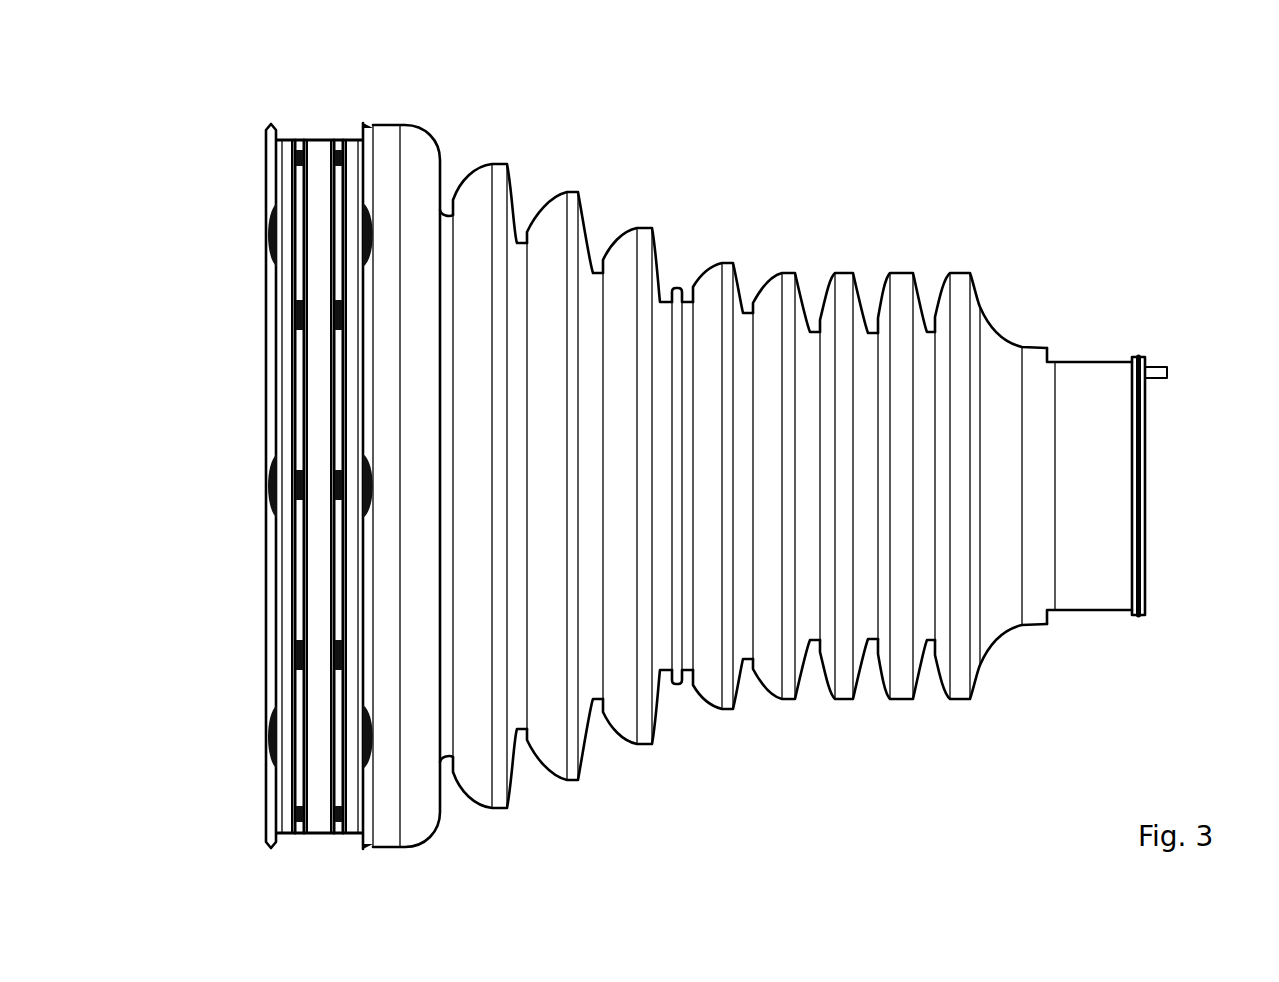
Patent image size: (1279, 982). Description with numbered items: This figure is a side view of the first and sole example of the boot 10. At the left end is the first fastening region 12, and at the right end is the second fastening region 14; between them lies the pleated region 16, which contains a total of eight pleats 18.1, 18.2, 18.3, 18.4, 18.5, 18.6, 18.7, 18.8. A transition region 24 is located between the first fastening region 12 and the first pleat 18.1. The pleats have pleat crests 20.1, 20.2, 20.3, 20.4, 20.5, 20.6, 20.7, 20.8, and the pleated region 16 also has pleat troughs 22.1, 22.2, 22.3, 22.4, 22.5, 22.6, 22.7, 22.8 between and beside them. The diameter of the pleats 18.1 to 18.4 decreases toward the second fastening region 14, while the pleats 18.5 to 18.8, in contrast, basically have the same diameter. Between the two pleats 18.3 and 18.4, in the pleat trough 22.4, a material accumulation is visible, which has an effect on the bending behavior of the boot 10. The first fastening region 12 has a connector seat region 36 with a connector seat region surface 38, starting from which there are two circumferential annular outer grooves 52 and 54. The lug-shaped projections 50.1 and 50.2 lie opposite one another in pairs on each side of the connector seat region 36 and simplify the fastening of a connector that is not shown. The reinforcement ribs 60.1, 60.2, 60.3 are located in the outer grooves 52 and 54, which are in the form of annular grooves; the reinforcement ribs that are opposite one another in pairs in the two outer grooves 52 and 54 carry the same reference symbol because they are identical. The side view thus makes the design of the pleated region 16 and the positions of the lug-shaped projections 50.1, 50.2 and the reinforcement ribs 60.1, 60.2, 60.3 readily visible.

The boot 10 is at (1154, 170).
The first fastening region 12 is at (358, 50).
The second fastening region 14 is at (1169, 271).
The pleated region 16 is at (821, 144).
The first pleat 18.1 is at (522, 502).
The second pleat 18.2 is at (596, 481).
The third pleat 18.3 is at (678, 486).
The fourth pleat 18.4 is at (762, 497).
The fifth pleat 18.5 is at (813, 489).
The sixth pleat 18.6 is at (875, 484).
The seventh pleat 18.7 is at (936, 472).
The eighth pleat 18.8 is at (1002, 473).
The pleat crest 20.1 is at (502, 810).
The pleat crest 20.2 is at (578, 780).
The pleat crest 20.3 is at (650, 745).
The pleat crest 20.4 is at (727, 710).
The pleat crest 20.5 is at (790, 700).
The pleat crest 20.6 is at (845, 700).
The pleat crest 20.7 is at (907, 700).
The pleat crest 20.8 is at (985, 695).
The pleat trough 22.1 is at (453, 762).
The pleat trough 22.2 is at (518, 728).
The pleat trough 22.3 is at (595, 700).
The pleat trough 22.4 is at (662, 672).
The pleat trough 22.5 is at (747, 657).
The pleat trough 22.6 is at (810, 645).
The pleat trough 22.7 is at (867, 647).
The pleat trough 22.8 is at (928, 645).
The transition region 24 is at (438, 117).
The connector seat region 36 is at (309, 851).
The connector seat region surface 38 is at (327, 835).
The lug-shaped projection 50.1 is at (265, 235).
The lug-shaped projection 50.2 is at (362, 230).
The outer groove 52 is at (297, 615).
The outer groove 54 is at (343, 692).
The reinforcement rib 60.1 is at (342, 143).
The reinforcement rib 60.2 is at (300, 302).
The reinforcement rib 60.3 is at (340, 655).